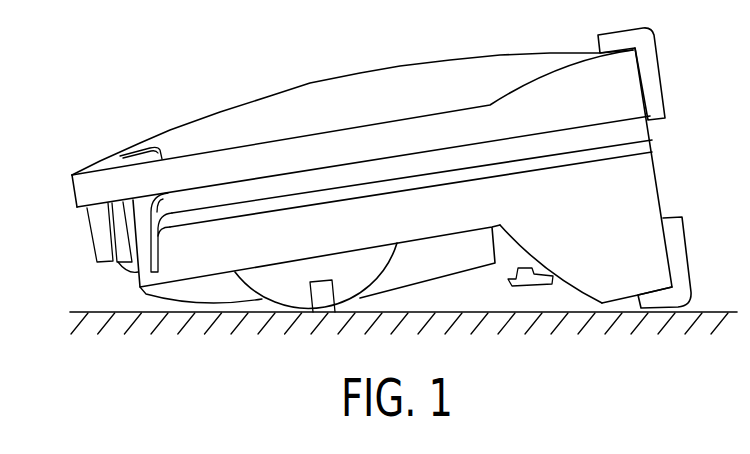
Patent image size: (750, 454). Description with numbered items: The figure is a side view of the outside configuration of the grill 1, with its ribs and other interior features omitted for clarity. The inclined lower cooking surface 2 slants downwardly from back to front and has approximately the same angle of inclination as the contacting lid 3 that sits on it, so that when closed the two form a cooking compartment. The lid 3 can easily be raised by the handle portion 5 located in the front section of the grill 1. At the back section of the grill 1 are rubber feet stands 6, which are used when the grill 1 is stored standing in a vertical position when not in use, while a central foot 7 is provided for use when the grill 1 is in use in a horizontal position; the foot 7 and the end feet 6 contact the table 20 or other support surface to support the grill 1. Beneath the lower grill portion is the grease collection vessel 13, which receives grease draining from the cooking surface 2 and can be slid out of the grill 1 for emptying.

The grill 1 is at (168, 86).
The inclined lower cooking surface 2 is at (410, 182).
The lid 3 is at (252, 145).
The handle portion 5 is at (88, 192).
The rubber feet stands 6 is at (651, 77).
The foot 7 is at (353, 304).
The grease collection vessel 13 is at (197, 293).
The table 20 is at (657, 313).